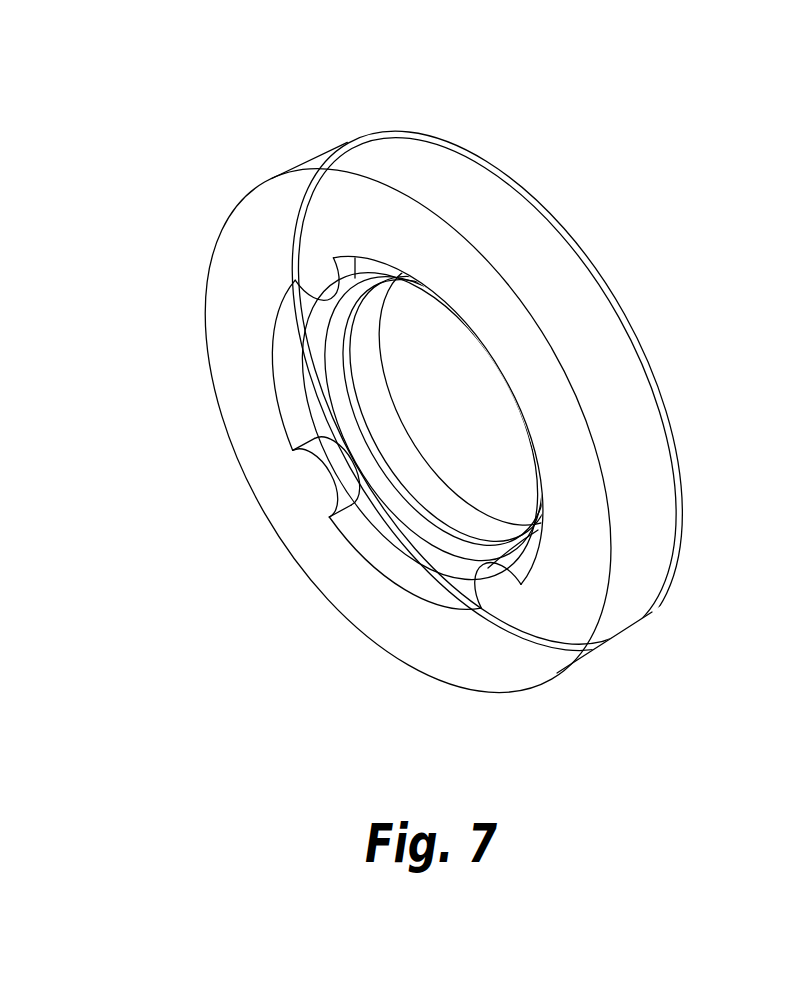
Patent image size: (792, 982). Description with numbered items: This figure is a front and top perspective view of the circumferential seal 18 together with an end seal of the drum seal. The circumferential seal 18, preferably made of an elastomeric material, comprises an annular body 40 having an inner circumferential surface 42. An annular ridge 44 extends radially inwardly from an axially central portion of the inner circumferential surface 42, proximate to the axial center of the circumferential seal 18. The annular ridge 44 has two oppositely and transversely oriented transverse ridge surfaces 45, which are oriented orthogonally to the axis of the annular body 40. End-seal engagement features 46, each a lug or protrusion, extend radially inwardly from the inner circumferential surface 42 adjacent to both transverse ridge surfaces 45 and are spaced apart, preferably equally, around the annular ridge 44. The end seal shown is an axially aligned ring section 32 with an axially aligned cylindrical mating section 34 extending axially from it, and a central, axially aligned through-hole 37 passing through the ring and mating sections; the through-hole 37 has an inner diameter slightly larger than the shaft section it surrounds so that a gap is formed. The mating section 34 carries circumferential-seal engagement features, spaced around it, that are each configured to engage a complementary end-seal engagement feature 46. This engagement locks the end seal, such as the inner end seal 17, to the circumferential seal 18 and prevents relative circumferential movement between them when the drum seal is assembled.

The circumferential seal 18 is at (228, 98).
The inner end seal 17 is at (561, 227).
The ring section 32 is at (666, 420).
The cylindrical mating section 34 is at (380, 430).
The through-hole 37 is at (372, 300).
The annular body 40 is at (512, 662).
The inner circumferential surface 42 is at (387, 560).
The annular ridge 44 is at (450, 547).
The transverse ridge surfaces 45 is at (388, 534).
The end-seal engagement features 46 is at (317, 280).